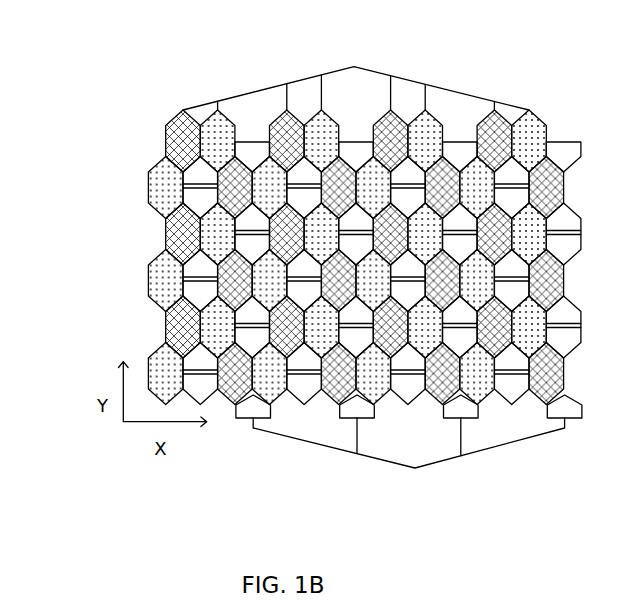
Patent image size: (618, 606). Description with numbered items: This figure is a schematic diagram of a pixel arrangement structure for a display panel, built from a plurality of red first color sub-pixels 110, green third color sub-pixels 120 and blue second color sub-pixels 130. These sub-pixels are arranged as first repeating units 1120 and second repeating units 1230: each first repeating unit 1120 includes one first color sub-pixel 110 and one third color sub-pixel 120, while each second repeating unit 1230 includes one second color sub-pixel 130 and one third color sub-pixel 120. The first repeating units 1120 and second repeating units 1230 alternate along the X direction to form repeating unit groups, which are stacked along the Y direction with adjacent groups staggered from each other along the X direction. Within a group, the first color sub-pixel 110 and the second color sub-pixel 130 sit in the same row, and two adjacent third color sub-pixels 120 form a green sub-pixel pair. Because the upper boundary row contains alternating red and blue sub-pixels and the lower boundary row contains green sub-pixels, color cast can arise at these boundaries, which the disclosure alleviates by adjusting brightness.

The first color sub-pixel 110 is at (190, 138).
The third color sub-pixel 120 is at (201, 171).
The second color sub-pixel 130 is at (171, 183).
The first repeating unit 1120 is at (76, 107).
The second repeating unit 1230 is at (76, 172).